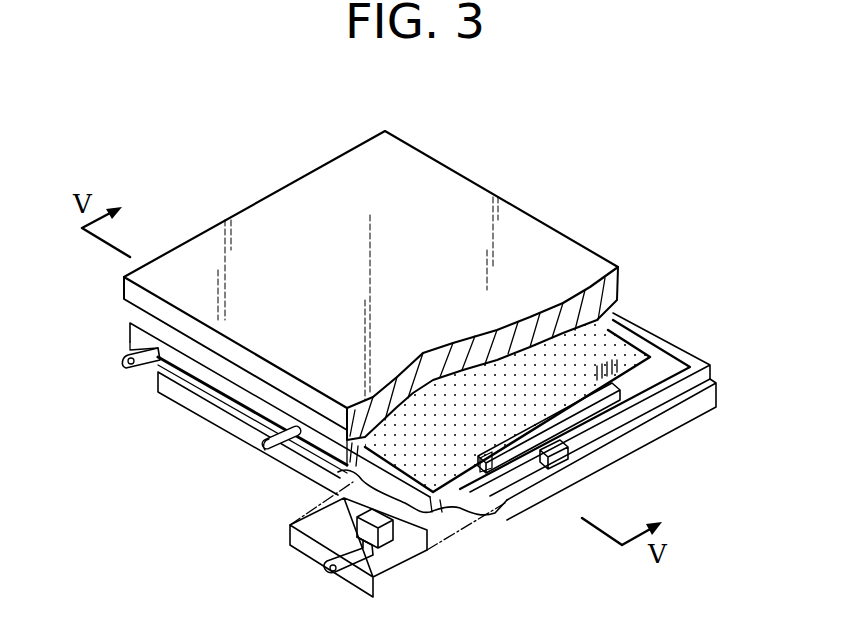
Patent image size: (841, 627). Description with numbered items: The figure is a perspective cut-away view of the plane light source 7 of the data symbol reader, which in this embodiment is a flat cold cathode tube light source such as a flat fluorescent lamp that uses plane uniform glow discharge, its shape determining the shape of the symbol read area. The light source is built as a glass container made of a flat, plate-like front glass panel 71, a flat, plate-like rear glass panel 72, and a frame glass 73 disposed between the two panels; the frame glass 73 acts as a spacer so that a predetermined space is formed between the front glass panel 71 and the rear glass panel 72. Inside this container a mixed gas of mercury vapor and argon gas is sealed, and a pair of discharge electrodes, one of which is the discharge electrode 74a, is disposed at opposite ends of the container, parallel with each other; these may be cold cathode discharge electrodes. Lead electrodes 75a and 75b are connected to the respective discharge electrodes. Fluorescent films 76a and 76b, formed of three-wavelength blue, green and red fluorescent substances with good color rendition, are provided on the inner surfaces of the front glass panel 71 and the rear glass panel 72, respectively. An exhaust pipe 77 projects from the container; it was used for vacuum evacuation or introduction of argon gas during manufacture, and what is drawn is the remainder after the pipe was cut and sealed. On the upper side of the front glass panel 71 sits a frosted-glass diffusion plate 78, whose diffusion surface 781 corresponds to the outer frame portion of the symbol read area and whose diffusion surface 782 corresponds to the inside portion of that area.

The plane light source 7 is at (612, 184).
The diffusion plate 78 is at (445, 191).
The diffusion surface 781 is at (213, 240).
The diffusion surface 782 is at (323, 217).
The front glass panel 71 is at (130, 308).
The rear glass panel 72 is at (605, 457).
The frame glass 73 is at (217, 385).
The discharge electrode 74a is at (662, 372).
The lead electrode 75a is at (323, 568).
The lead electrode 75b is at (122, 362).
The fluorescent film 76a is at (463, 460).
The fluorescent film 76b is at (428, 488).
The exhaust pipe 77 is at (268, 448).